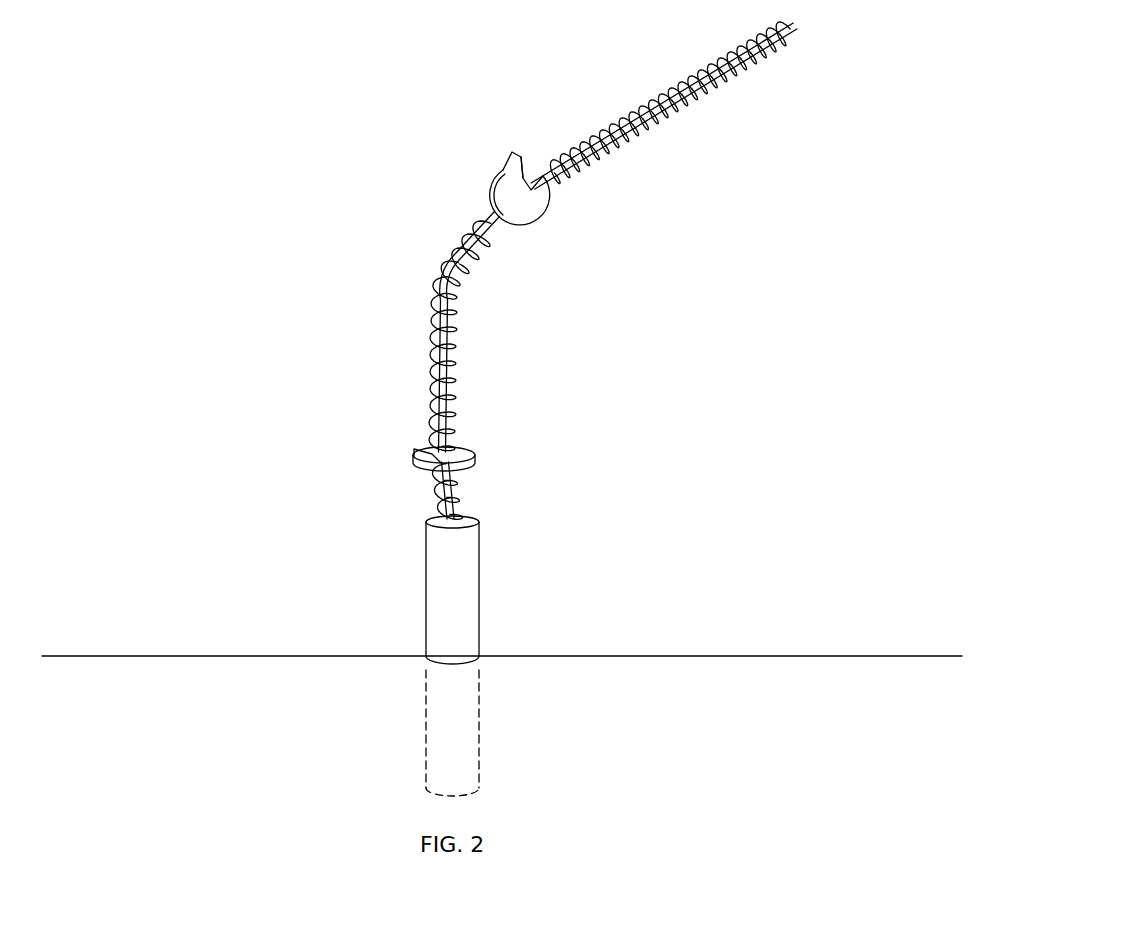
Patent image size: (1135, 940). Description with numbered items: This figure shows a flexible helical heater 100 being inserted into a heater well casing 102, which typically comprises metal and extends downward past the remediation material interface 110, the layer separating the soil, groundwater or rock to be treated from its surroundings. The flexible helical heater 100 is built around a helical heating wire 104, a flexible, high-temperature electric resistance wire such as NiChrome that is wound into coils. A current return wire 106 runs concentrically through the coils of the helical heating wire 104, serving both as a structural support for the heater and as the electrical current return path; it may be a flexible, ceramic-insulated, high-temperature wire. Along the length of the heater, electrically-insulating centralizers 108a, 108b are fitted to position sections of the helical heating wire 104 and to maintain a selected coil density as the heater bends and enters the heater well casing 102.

The flexible helical heater 100 is at (435, 205).
The heater well casing 102 is at (426, 573).
The helical heating wire 104 is at (435, 265).
The current return wire 106 is at (433, 372).
The electrically-insulating centralizer 108a is at (415, 462).
The electrically-insulating centralizer 108b is at (490, 170).
The remediation material interface 110 is at (375, 656).